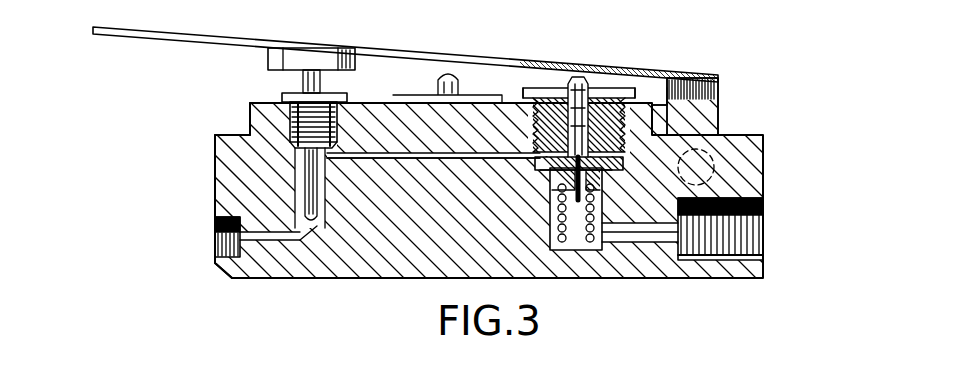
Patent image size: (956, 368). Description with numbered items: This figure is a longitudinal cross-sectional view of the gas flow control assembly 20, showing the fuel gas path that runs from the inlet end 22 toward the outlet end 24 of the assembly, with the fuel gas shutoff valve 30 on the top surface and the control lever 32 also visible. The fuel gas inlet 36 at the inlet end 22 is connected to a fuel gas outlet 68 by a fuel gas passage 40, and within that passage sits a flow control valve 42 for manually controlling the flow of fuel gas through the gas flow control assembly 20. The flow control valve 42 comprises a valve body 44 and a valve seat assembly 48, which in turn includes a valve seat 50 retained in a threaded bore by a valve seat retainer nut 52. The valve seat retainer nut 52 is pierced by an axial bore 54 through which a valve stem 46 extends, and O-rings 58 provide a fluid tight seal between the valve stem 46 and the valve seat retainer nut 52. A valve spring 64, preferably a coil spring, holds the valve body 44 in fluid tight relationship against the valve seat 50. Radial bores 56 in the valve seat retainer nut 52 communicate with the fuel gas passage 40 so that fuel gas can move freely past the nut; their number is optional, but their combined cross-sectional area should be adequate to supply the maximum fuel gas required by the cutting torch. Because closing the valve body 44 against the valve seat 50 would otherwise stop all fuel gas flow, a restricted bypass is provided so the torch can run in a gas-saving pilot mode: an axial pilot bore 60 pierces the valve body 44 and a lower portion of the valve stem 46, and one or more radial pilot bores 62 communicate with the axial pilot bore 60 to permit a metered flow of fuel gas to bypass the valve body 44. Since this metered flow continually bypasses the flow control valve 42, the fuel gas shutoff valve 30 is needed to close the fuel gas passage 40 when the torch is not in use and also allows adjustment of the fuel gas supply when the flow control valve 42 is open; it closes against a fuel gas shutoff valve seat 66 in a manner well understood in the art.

The gas flow control assembly 20 is at (766, 160).
The inlet end 22 is at (763, 182).
The outlet end 24 is at (215, 172).
The fuel gas shutoff valve 30 is at (300, 58).
The control lever 32 is at (133, 26).
The fuel gas inlet 36 is at (763, 220).
The fuel gas passage 40 is at (275, 240).
The flow control valve 42 is at (549, 174).
The valve body 44 is at (546, 178).
The valve stem 46 is at (583, 77).
The valve seat assembly 48 is at (620, 70).
The valve seat 50 is at (556, 166).
The valve seat retainer nut 52 is at (641, 98).
The axial bore 54 is at (668, 88).
The radial bores 56 is at (684, 76).
The O-rings 58 is at (568, 96).
The axial pilot bore 60 is at (602, 185).
The radial pilot bores 62 is at (530, 150).
The valve spring 64 is at (582, 236).
The fuel gas shutoff valve seat 66 is at (316, 243).
The fuel gas outlet 68 is at (218, 243).